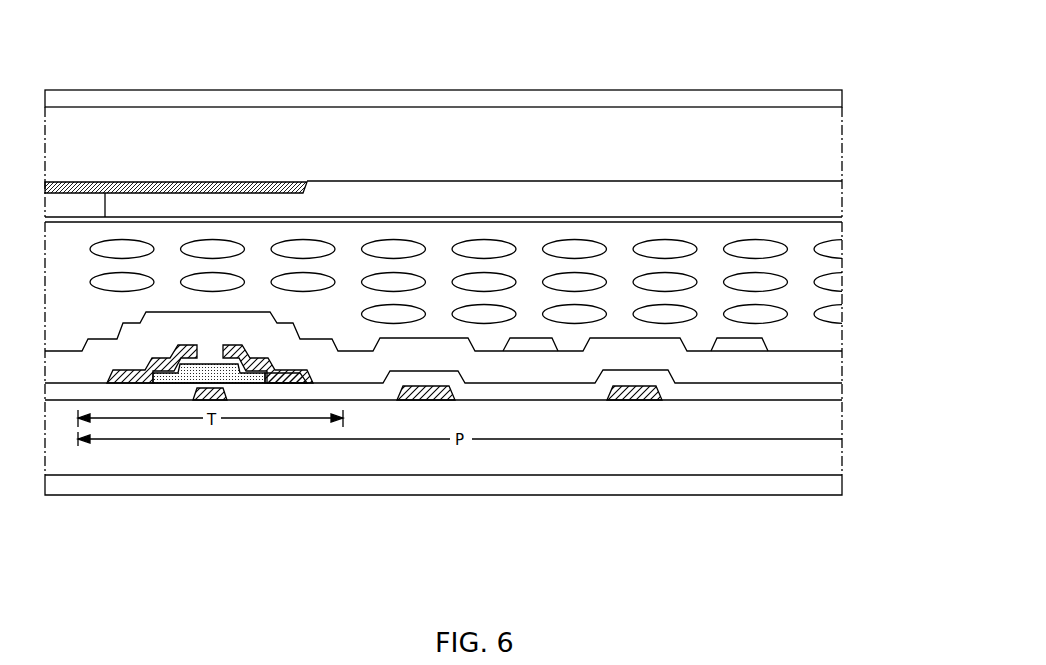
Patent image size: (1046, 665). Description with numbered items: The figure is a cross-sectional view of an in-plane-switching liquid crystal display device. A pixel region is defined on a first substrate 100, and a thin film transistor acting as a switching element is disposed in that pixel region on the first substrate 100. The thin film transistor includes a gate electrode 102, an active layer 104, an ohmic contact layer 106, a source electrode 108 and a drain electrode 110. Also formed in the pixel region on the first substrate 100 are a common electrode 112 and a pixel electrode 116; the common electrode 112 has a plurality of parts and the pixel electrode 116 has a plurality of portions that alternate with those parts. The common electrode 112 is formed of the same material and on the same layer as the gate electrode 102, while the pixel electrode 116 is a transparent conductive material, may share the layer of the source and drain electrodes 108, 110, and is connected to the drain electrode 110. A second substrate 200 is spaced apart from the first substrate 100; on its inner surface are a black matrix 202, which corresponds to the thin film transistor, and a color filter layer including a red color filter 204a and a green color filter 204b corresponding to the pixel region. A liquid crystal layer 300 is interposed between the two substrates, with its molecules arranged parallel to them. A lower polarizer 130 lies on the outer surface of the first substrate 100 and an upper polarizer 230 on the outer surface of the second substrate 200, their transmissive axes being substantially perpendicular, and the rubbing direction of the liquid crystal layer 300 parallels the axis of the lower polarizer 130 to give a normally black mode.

The first substrate 100 is at (821, 463).
The gate electrode 102 is at (205, 401).
The active layer 104 is at (260, 390).
The ohmic contact layer 106 is at (265, 360).
The source electrode 108 is at (183, 345).
The drain electrode 110 is at (252, 347).
The common electrode 112 is at (435, 399).
The pixel electrode 116 is at (532, 347).
The lower polarizer 130 is at (493, 495).
The second substrate 200 is at (441, 147).
The black matrix 202 is at (235, 181).
The red color filter 204a is at (90, 203).
The green color filter 204b is at (720, 187).
The upper polarizer 230 is at (500, 91).
The liquid crystal layer 300 is at (841, 264).